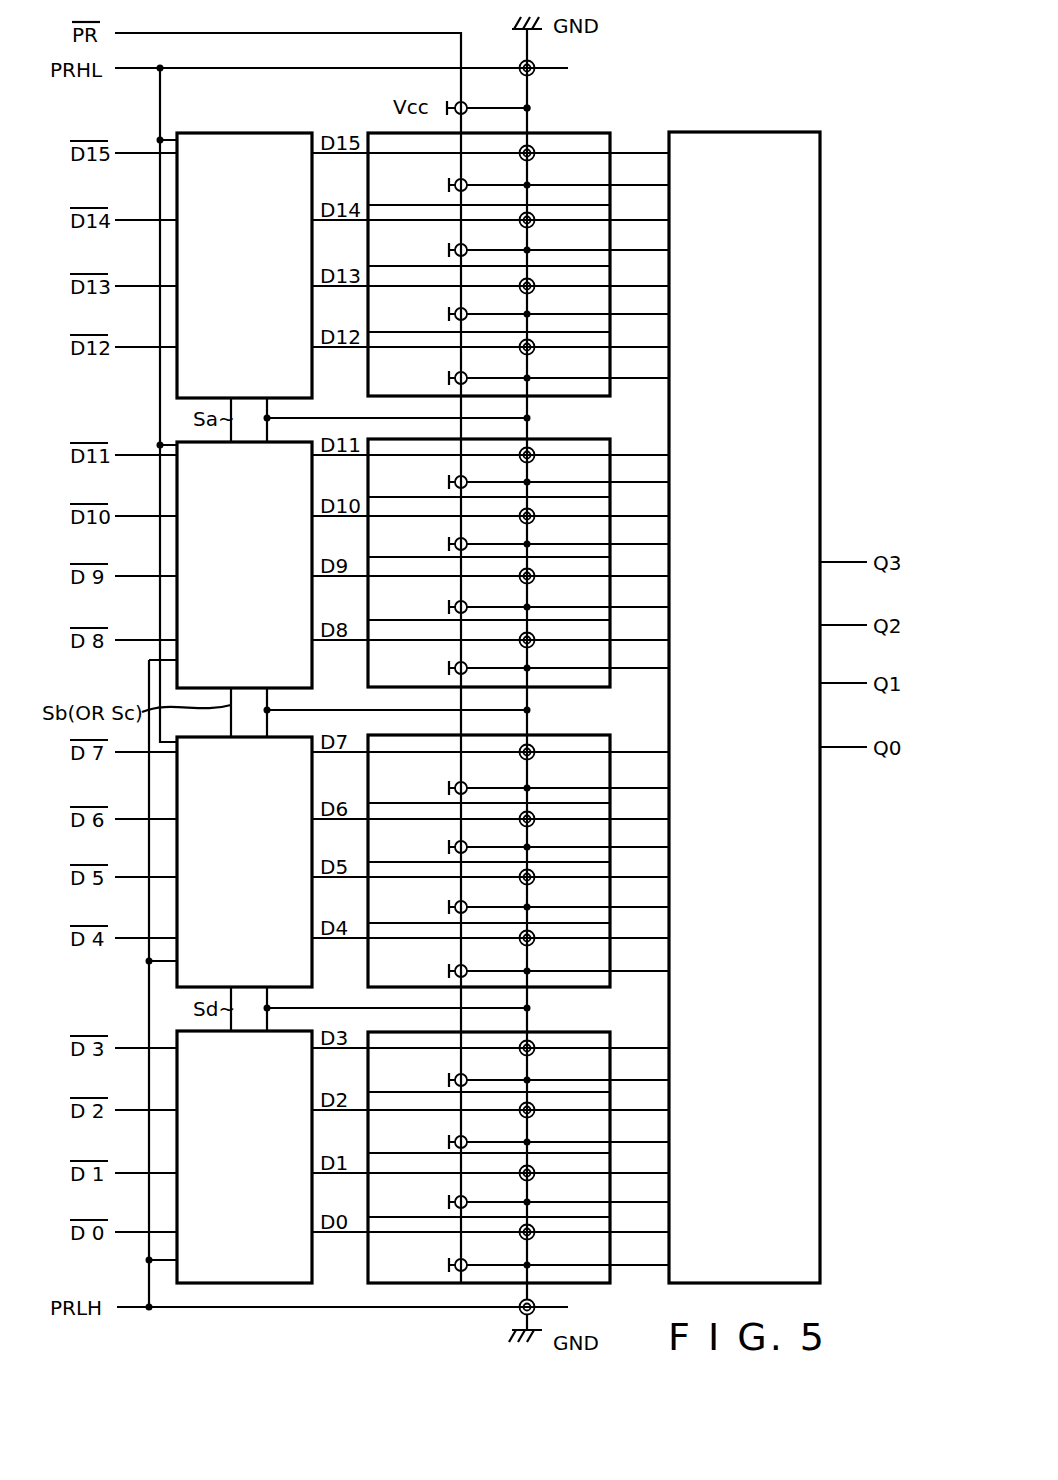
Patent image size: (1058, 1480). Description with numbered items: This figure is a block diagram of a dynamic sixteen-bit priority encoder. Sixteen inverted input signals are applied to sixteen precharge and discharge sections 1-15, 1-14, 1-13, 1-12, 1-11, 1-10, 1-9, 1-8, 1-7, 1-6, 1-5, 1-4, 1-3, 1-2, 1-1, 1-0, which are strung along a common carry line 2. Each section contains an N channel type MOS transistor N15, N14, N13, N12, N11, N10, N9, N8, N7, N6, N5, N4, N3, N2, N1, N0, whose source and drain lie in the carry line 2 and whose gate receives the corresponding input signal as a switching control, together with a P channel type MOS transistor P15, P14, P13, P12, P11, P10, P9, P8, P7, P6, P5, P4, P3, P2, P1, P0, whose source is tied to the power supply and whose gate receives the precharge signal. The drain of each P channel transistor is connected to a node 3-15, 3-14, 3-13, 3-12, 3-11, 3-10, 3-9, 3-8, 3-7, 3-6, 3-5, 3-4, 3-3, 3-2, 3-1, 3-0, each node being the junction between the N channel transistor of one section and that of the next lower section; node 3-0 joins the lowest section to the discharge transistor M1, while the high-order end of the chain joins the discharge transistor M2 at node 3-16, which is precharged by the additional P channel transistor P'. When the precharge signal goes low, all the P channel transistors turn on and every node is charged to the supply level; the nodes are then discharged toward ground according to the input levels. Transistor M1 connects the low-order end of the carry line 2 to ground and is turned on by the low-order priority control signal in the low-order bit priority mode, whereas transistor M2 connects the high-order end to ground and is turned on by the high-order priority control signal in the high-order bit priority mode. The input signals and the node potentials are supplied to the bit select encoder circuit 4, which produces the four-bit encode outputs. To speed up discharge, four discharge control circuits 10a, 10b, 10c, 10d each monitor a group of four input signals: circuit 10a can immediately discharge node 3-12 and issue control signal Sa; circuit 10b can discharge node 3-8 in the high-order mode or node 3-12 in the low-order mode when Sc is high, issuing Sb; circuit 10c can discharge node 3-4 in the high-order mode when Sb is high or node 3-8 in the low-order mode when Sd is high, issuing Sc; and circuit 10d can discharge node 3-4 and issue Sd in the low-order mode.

The carry line 2 is at (531, 78).
The bit select encoder circuit 4 is at (730, 132).
The discharge control circuit 10a is at (232, 133).
The discharge control circuit 10b is at (312, 672).
The discharge control circuit 10c is at (220, 746).
The discharge control circuit 10d is at (312, 1264).
The MOS transistor for discharge M1 is at (519, 1313).
The MOS transistor for discharge M2 is at (519, 62).
The P channel type MOS transistor P' is at (474, 99).
The node 3-16 is at (530, 110).
The N channel type MOS transistor N15 is at (522, 160).
The P channel type MOS transistor P15 is at (456, 189).
The node 3-15 is at (530, 183).
The precharge and discharge section 1-15 is at (607, 188).
The N channel type MOS transistor N14 is at (522, 227).
The P channel type MOS transistor P14 is at (456, 254).
The node 3-14 is at (530, 248).
The precharge and discharge section 1-14 is at (607, 253).
The N channel type MOS transistor N13 is at (522, 293).
The P channel type MOS transistor P13 is at (456, 318).
The node 3-13 is at (530, 312).
The precharge and discharge section 1-13 is at (607, 317).
The N channel type MOS transistor N12 is at (522, 354).
The P channel type MOS transistor P12 is at (456, 382).
The node 3-12 is at (530, 376).
The precharge and discharge section 1-12 is at (607, 381).
The N channel type MOS transistor N11 is at (522, 462).
The P channel type MOS transistor P11 is at (456, 486).
The node 3-11 is at (530, 480).
The precharge and discharge section 1-11 is at (607, 485).
The N channel type MOS transistor N10 is at (522, 523).
The P channel type MOS transistor P10 is at (456, 548).
The node 3-10 is at (530, 542).
The precharge and discharge section 1-10 is at (607, 547).
The N channel type MOS transistor N9 is at (522, 583).
The P channel type MOS transistor P9 is at (456, 611).
The node 3-9 is at (530, 605).
The precharge and discharge section 1-9 is at (607, 610).
The N channel type MOS transistor N8 is at (522, 647).
The P channel type MOS transistor P8 is at (456, 672).
The node 3-8 is at (530, 666).
The precharge and discharge section 1-8 is at (607, 671).
The N channel type MOS transistor N7 is at (522, 759).
The P channel type MOS transistor P7 is at (456, 792).
The node 3-7 is at (530, 786).
The precharge and discharge section 1-7 is at (608, 740).
The N channel type MOS transistor N6 is at (522, 826).
The P channel type MOS transistor P6 is at (456, 851).
The node 3-6 is at (530, 845).
The precharge and discharge section 1-6 is at (608, 817).
The N channel type MOS transistor N5 is at (522, 884).
The P channel type MOS transistor P5 is at (456, 911).
The node 3-5 is at (530, 905).
The precharge and discharge section 1-5 is at (608, 876).
The N channel type MOS transistor N4 is at (522, 945).
The P channel type MOS transistor P4 is at (456, 975).
The node 3-4 is at (530, 969).
The precharge and discharge section 1-4 is at (608, 937).
The N channel type MOS transistor N3 is at (522, 1055).
The P channel type MOS transistor P3 is at (456, 1084).
The node 3-3 is at (530, 1078).
The precharge and discharge section 1-3 is at (608, 1044).
The N channel type MOS transistor N2 is at (522, 1117).
The P channel type MOS transistor P2 is at (456, 1146).
The node 3-2 is at (530, 1140).
The precharge and discharge section 1-2 is at (608, 1105).
The N channel type MOS transistor N1 is at (522, 1180).
The P channel type MOS transistor P1 is at (456, 1206).
The node 3-1 is at (530, 1200).
The precharge and discharge section 1-1 is at (608, 1166).
The N channel type MOS transistor N0 is at (522, 1239).
The P channel type MOS transistor P0 is at (456, 1269).
The node 3-0 is at (530, 1263).
The precharge and discharge section 1-0 is at (608, 1230).